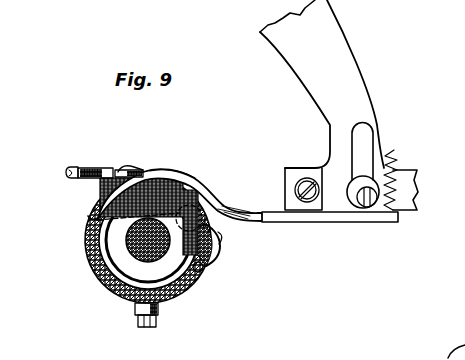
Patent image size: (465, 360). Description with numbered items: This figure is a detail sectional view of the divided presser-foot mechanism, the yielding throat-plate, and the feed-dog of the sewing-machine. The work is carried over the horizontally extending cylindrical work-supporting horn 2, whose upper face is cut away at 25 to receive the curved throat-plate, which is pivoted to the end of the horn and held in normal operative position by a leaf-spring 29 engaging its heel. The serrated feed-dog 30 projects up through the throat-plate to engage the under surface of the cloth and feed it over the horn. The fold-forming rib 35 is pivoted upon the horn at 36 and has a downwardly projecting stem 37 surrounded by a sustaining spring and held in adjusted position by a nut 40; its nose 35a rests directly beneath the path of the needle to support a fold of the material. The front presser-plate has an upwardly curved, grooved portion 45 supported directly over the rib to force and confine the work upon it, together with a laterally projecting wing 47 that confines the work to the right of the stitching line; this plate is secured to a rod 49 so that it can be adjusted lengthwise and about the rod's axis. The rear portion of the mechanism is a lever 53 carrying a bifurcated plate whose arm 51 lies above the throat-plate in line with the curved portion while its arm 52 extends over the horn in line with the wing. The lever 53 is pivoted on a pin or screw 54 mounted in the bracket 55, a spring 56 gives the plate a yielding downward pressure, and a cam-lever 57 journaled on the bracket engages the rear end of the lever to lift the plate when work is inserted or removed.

The work-supporting horn 2 is at (103, 266).
The cut-away portion 25 is at (190, 192).
The leaf-spring 29 is at (222, 236).
The feed-dog 30 is at (97, 230).
The fold-forming rib 35 is at (100, 185).
The nose of the rib 35a is at (118, 168).
The pivot of the rib 36 is at (203, 268).
The stem 37 is at (150, 323).
The nut 40 is at (136, 309).
The curved portion of the presser-plate 45 is at (83, 168).
The wing 47 is at (100, 168).
The rod 49 is at (68, 172).
The arm of the bifurcated plate 51 is at (137, 178).
The arm of the bifurcated plate 52 is at (158, 170).
The lever 53 is at (262, 200).
The pin or screw 54 is at (302, 180).
The bracket 55 is at (322, 84).
The spring 56 is at (395, 152).
The cam-lever 57 is at (355, 203).